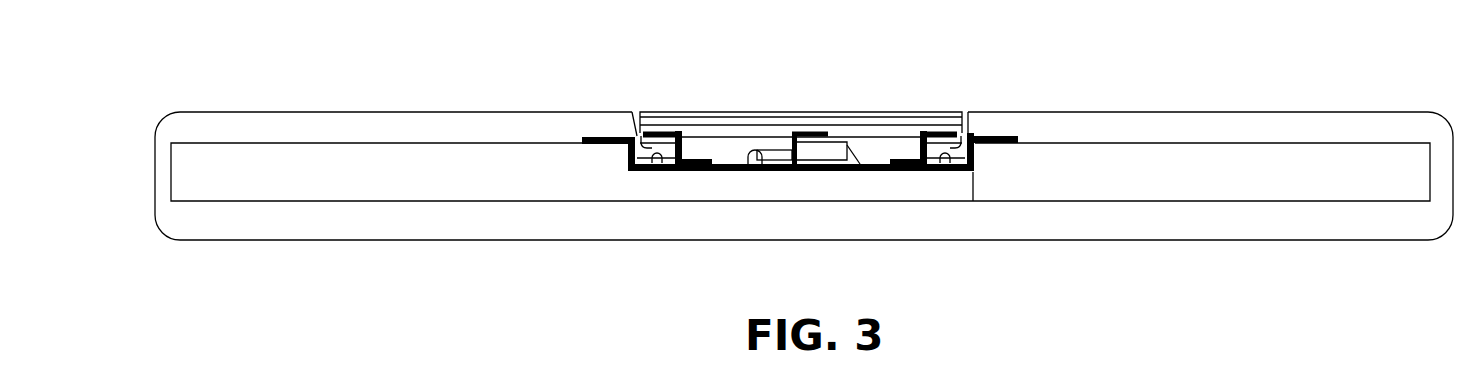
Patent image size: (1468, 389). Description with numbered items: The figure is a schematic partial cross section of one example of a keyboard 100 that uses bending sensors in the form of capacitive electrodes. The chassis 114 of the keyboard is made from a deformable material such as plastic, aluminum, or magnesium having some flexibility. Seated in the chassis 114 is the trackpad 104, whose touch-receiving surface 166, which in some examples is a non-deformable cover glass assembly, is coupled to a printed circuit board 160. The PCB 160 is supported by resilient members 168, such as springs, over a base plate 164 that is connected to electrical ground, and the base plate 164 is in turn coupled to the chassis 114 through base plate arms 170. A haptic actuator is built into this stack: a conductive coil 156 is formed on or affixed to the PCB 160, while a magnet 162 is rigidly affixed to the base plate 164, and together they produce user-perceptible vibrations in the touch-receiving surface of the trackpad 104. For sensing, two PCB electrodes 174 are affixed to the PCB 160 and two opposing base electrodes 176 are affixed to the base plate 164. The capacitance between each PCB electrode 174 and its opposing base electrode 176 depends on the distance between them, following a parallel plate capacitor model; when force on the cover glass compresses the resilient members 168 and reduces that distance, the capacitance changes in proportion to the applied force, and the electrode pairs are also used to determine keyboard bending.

The keyboard 100 is at (199, 68).
The trackpad 104 is at (793, 126).
The chassis 114 is at (153, 168).
The conductive coil 156 is at (860, 165).
The printed circuit board 160 is at (778, 133).
The magnet 162 is at (750, 172).
The base plate 164 is at (820, 172).
The touch-receiving surface 166 is at (912, 113).
The resilient members 168 is at (788, 150).
The base plate arms 170 is at (606, 137).
The PCB electrodes 174 is at (638, 138).
The base electrodes 176 is at (668, 172).